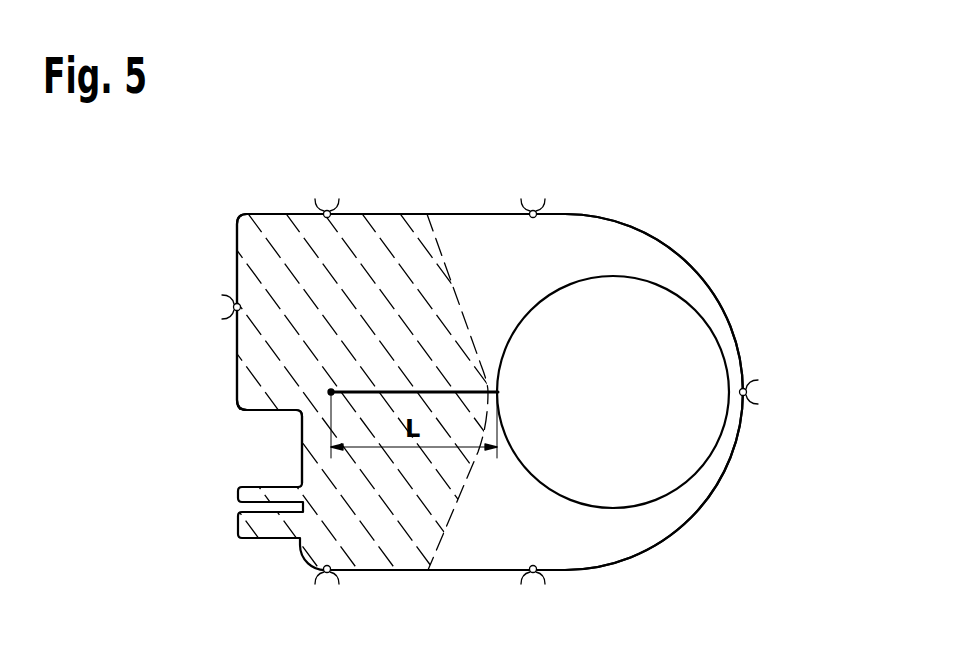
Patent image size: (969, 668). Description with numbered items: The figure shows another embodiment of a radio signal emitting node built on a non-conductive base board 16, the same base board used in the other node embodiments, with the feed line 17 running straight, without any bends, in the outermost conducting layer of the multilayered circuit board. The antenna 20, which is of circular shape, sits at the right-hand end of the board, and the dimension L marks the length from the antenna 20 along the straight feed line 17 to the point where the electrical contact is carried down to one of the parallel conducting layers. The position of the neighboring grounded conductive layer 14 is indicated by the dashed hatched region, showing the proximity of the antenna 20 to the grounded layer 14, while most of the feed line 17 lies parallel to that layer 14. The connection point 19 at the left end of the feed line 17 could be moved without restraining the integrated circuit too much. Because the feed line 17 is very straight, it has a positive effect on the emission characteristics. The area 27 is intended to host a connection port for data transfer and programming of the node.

The grounded conductive layer 14 is at (277, 270).
The non-conductive base board 16 is at (606, 245).
The feed line 17 is at (400, 390).
The connection point 19 is at (330, 393).
The antenna 20 is at (660, 313).
The area 27 is at (186, 561).